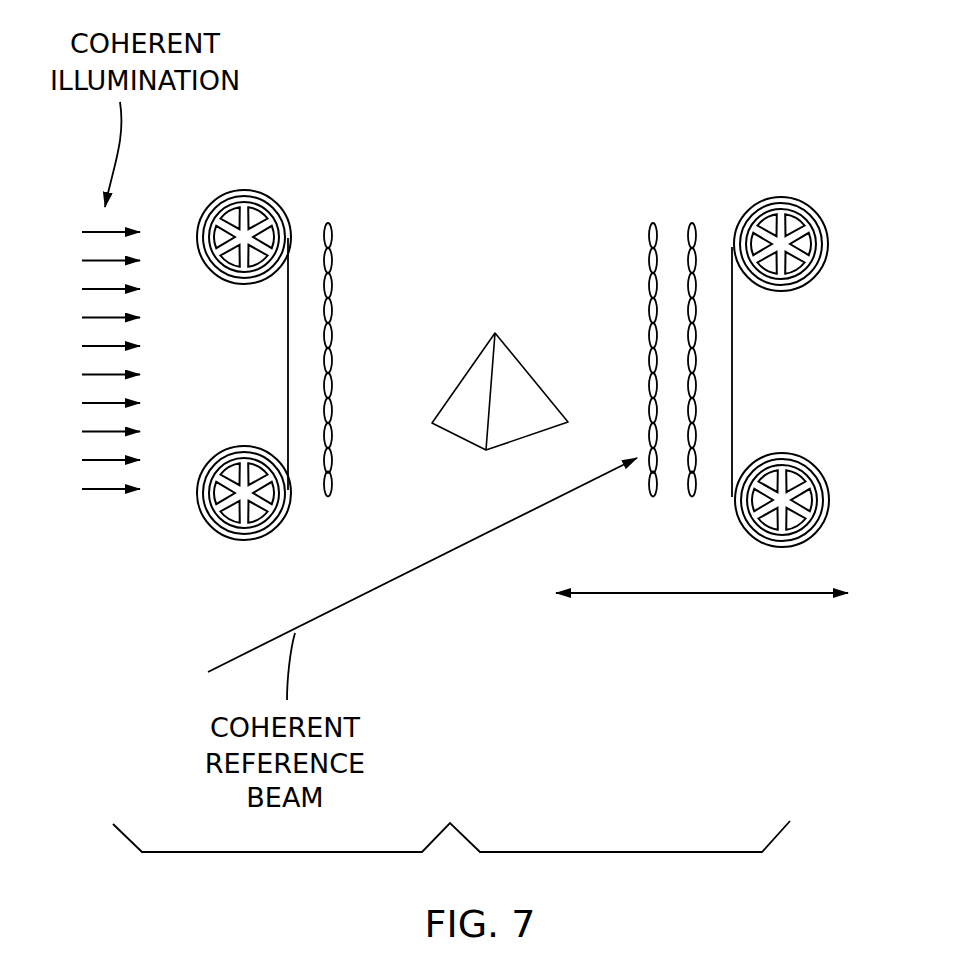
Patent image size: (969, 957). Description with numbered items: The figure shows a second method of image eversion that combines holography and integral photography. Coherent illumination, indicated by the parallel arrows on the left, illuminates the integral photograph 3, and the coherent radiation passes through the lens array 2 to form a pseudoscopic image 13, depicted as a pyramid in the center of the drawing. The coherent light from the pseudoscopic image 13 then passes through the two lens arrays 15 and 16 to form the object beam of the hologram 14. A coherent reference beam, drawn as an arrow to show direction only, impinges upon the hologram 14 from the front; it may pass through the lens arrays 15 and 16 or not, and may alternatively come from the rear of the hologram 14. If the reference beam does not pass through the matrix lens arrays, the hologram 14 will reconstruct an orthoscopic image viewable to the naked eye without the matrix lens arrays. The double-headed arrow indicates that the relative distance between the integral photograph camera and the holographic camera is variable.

The lens array 2 is at (345, 254).
The integral photograph 3 is at (267, 177).
The pseudoscopic image 13 is at (448, 368).
The hologram 14 is at (762, 347).
The lens array 15 is at (653, 202).
The lens array 16 is at (693, 203).